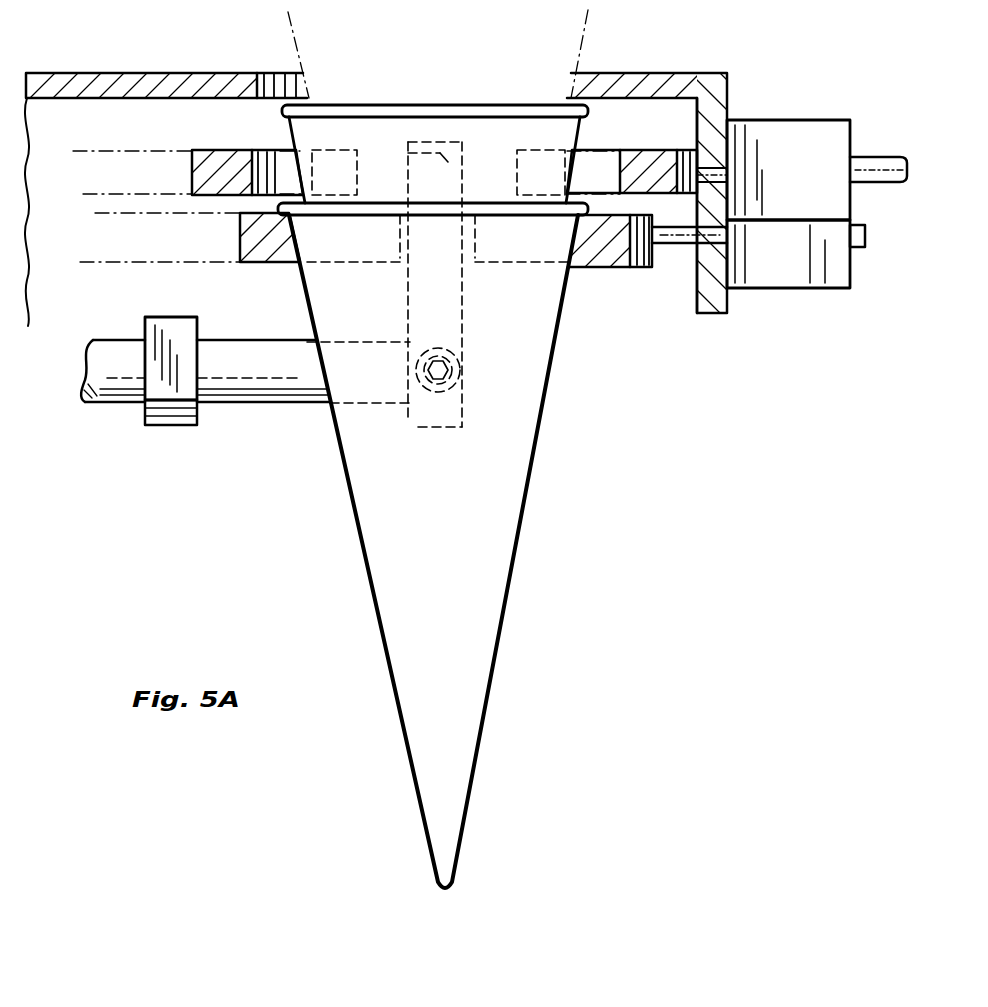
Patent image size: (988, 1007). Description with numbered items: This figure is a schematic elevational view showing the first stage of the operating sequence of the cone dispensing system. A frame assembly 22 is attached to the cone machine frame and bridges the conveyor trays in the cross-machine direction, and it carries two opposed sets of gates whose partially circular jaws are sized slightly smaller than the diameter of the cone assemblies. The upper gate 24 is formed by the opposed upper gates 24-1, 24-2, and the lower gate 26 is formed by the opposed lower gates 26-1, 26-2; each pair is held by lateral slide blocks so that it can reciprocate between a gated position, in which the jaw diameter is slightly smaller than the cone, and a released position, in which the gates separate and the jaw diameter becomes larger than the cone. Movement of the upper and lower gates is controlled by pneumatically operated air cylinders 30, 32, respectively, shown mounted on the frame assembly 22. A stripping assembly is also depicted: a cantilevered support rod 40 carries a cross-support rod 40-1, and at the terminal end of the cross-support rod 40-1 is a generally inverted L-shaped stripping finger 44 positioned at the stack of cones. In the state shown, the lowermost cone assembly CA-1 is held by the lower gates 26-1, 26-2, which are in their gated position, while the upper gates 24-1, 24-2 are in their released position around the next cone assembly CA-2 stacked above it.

The frame assembly 22 is at (684, 82).
The upper gate 24 is at (287, 173).
The upper gate 24-1 is at (213, 156).
The upper gate 24-2 is at (652, 160).
The lower gate 26 is at (357, 250).
The lower gate 26-1 is at (255, 232).
The lower gate 26-2 is at (613, 268).
The air cylinder 30 is at (795, 176).
The air cylinder 32 is at (795, 264).
The support rod 40 is at (178, 412).
The cross-support rod 40-1 is at (100, 350).
The stripping finger 44 is at (463, 145).
The lowermost cone assembly CA-1 is at (463, 609).
The cone assembly CA-2 is at (385, 142).